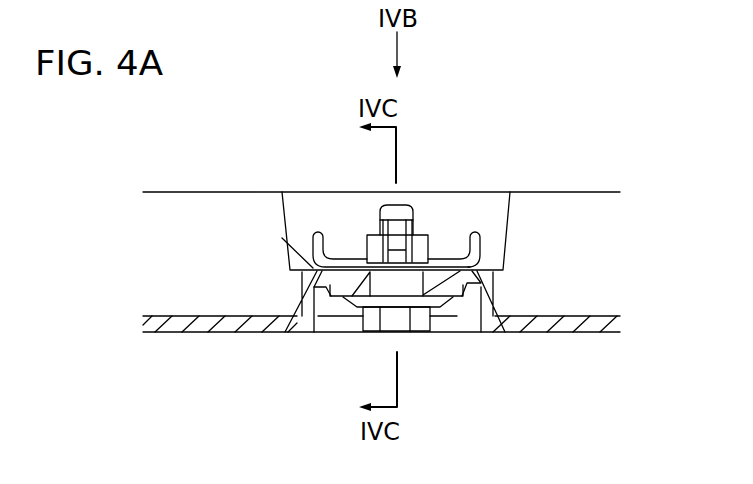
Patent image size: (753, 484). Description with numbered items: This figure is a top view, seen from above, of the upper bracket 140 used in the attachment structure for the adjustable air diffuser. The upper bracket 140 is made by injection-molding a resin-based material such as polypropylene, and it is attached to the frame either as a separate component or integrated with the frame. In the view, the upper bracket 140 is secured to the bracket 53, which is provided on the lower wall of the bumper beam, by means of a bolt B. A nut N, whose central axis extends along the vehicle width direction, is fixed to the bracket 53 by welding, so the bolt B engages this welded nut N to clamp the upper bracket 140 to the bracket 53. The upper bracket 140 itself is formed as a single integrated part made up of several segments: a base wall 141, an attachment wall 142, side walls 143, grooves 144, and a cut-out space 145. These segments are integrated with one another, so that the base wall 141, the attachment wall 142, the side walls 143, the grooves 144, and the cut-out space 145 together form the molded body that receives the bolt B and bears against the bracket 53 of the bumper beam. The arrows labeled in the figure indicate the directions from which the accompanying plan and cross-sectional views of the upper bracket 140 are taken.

The upper bracket 140 is at (300, 368).
The base wall 141 is at (188, 337).
The attachment wall 142 is at (282, 238).
The side walls 143 is at (303, 299).
The grooves 144 is at (312, 287).
The cut-out space 145 is at (458, 324).
The bracket 53 is at (463, 266).
The bolt B is at (380, 213).
The nut N is at (429, 250).